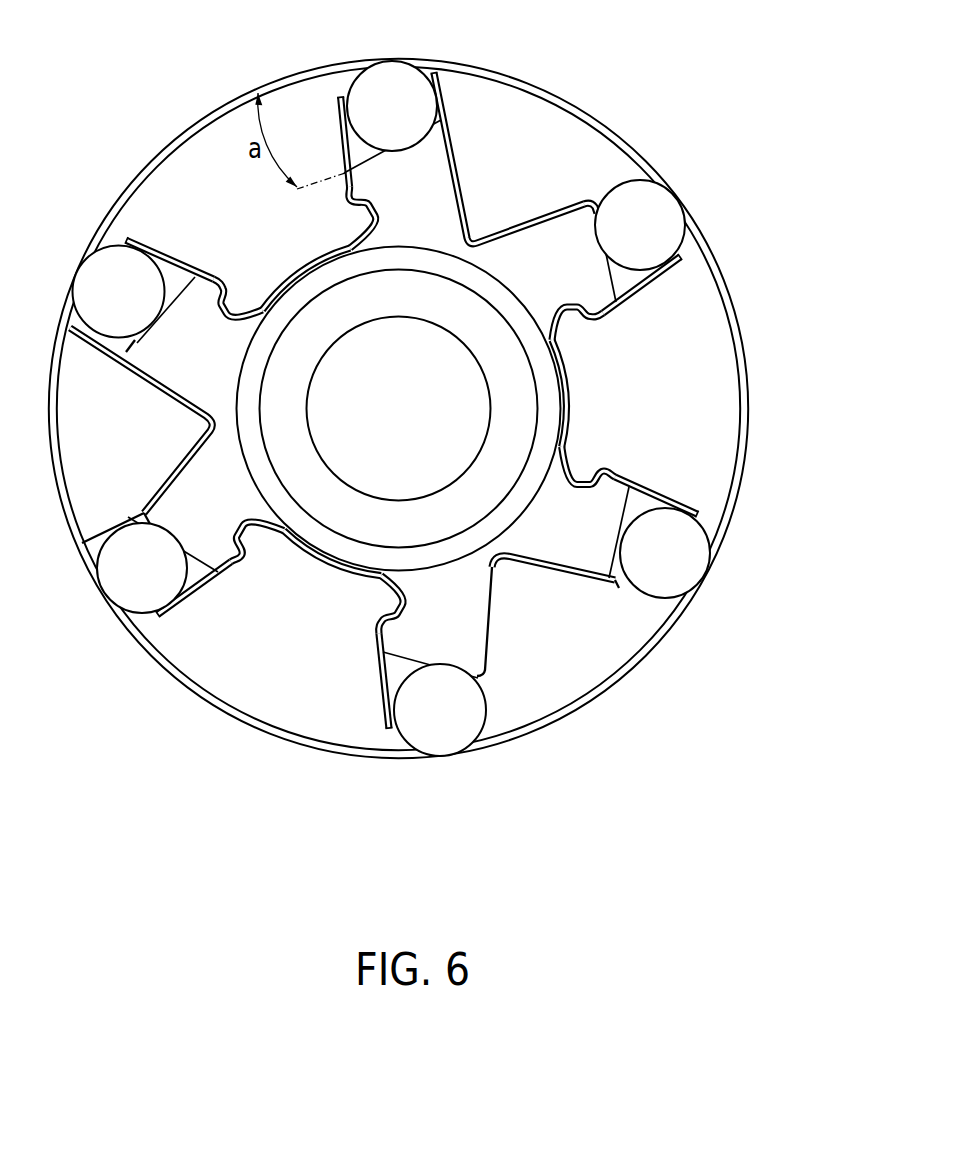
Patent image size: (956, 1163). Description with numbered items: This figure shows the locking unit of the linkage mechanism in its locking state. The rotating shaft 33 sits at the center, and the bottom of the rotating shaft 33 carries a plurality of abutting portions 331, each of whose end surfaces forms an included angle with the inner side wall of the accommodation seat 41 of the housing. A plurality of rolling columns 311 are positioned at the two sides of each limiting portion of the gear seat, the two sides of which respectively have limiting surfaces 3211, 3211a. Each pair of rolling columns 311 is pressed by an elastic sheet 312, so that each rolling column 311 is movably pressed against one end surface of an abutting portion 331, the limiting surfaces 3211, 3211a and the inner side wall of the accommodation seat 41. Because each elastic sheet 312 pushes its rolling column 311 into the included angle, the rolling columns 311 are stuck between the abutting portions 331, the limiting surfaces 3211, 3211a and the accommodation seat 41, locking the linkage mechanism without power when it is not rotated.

The rolling column 311 is at (388, 82).
The elastic sheet 312 is at (170, 256).
The limiting surface 3211 is at (447, 126).
The limiting surface 3211a is at (592, 200).
The rotating shaft 33 is at (548, 402).
The abutting portion 331 is at (590, 290).
The accommodation seat 41 is at (745, 488).